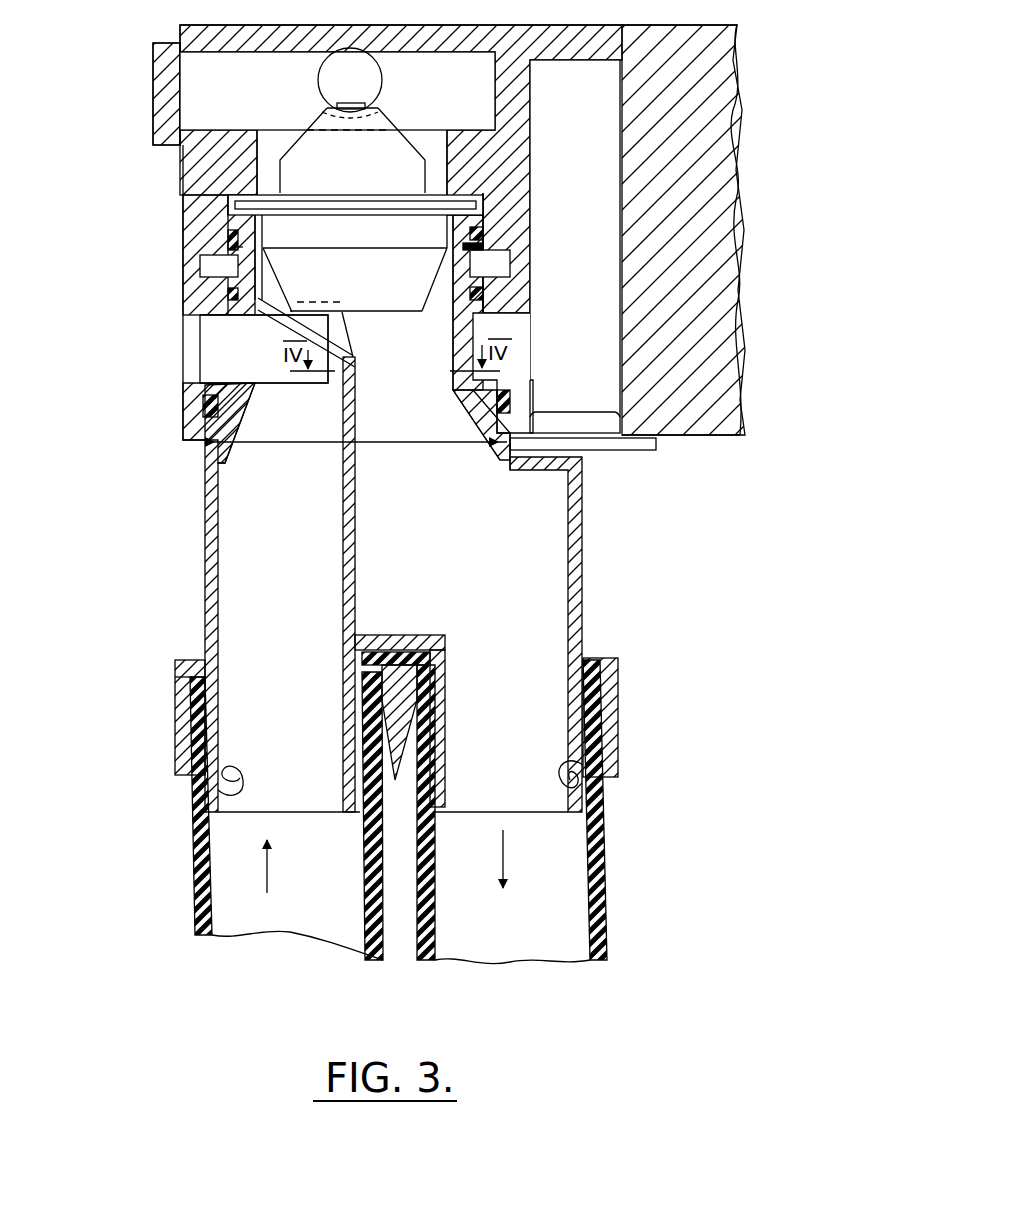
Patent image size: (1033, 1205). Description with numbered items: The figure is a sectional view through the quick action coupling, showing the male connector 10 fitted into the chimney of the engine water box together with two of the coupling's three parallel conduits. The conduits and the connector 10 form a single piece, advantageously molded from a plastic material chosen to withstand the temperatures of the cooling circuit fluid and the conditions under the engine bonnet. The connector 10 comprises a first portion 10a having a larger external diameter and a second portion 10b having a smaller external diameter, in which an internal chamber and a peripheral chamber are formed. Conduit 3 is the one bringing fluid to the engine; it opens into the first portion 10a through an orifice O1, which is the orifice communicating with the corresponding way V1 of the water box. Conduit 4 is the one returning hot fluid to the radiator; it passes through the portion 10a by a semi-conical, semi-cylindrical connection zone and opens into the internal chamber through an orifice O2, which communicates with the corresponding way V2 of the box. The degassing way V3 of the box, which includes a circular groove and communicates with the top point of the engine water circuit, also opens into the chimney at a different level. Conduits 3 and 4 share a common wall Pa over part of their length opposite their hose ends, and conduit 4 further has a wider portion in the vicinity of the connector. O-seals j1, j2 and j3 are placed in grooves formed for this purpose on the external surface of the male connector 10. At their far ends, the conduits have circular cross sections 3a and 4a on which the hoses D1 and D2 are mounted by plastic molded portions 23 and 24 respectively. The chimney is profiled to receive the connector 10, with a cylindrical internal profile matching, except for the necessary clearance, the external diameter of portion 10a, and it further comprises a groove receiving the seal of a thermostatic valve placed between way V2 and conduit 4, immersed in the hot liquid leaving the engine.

The male connector 10 is at (72, 228).
The first portion 10a is at (190, 405).
The second portion 10b is at (240, 247).
The way V2 is at (318, 76).
The way V1 is at (182, 318).
The degassing way V3 is at (503, 263).
The orifice O2 is at (402, 209).
The orifice O1 is at (280, 394).
The frustum / throttle TH is at (402, 290).
The common wall Pa is at (345, 470).
The O-seal j1 is at (520, 397).
The O-seal j2 is at (483, 292).
The O-seal j3 is at (470, 213).
The conduit 3 is at (262, 588).
The conduit 4 is at (530, 606).
The molded portion 23 is at (175, 676).
The molded portion 24 is at (610, 663).
The end 3a is at (190, 797).
The end 4a is at (585, 795).
The hose D1 is at (192, 898).
The hose D2 is at (607, 918).